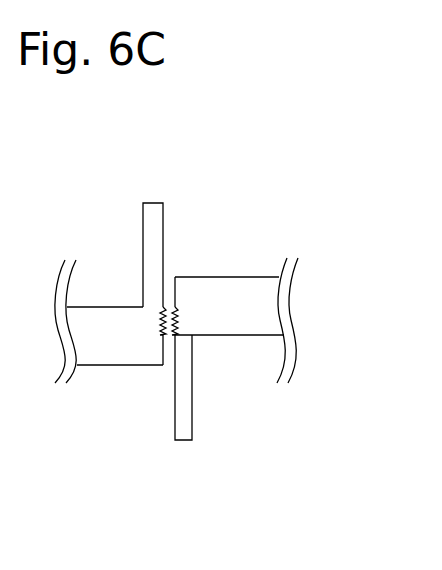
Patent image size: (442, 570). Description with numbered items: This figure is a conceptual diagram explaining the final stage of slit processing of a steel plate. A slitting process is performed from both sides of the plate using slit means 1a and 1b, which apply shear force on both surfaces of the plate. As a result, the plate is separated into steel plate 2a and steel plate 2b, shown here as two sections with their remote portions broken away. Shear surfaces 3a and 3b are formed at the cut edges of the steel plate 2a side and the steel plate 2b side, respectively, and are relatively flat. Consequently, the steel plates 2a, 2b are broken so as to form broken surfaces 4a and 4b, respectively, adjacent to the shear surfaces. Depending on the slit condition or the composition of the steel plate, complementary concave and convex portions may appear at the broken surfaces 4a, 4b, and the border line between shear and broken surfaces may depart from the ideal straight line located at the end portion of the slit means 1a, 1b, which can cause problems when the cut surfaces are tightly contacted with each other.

The slit means 1a is at (152, 223).
The slit means 1b is at (183, 420).
The steel plate 2a is at (87, 348).
The steel plate 2b is at (315, 299).
The shear surface 3a is at (156, 348).
The shear surface 3b is at (181, 293).
The broken surface 4a is at (157, 322).
The broken surface 4b is at (180, 321).